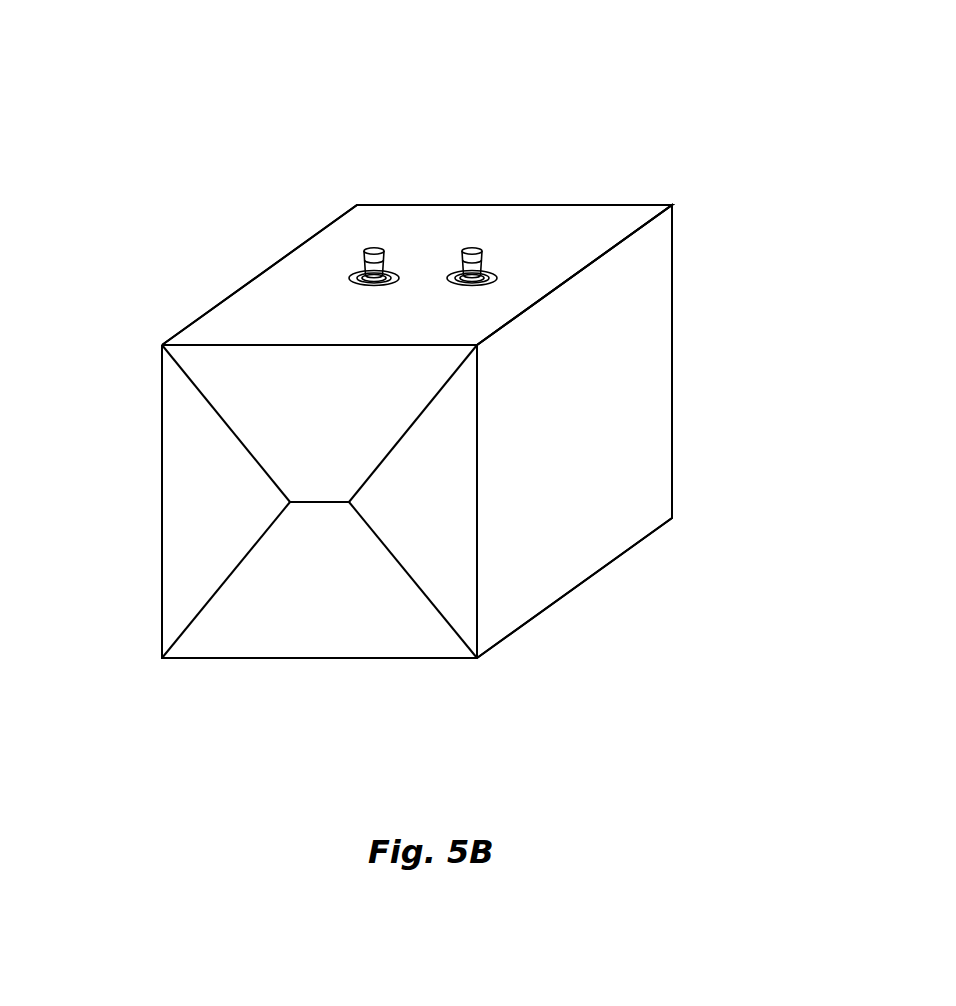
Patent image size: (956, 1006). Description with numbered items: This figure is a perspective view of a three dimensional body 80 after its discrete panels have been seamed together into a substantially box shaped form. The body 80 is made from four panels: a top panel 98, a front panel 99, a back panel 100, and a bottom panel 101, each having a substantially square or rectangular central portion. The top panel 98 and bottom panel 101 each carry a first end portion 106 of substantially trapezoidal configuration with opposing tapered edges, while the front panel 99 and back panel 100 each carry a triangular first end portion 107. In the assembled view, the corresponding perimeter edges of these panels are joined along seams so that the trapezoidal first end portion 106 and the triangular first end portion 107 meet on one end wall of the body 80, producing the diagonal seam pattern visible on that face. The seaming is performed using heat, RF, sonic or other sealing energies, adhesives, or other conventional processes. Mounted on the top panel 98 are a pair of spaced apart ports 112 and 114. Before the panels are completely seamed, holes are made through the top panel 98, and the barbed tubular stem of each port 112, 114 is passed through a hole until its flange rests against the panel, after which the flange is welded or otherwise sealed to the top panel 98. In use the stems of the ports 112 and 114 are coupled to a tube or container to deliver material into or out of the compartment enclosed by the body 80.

The three dimensional body 80 is at (652, 140).
The top panel 98 is at (315, 283).
The front panel 99 is at (616, 430).
The back panel 100 is at (160, 502).
The bottom panel 101 is at (390, 660).
The first end portion 106 is at (307, 437).
The triangular first end portion 107 is at (187, 568).
The port 112 is at (374, 249).
The port 114 is at (472, 249).